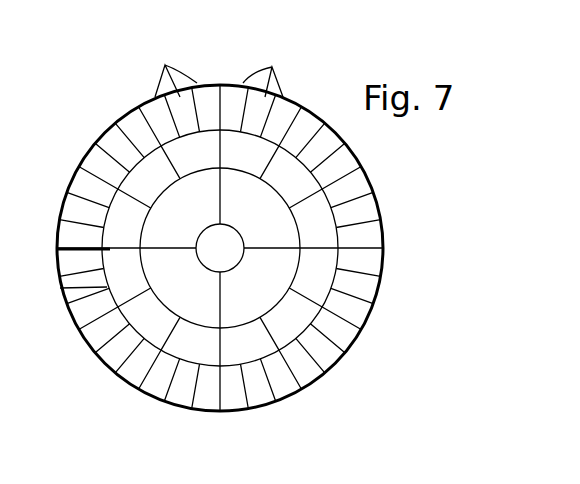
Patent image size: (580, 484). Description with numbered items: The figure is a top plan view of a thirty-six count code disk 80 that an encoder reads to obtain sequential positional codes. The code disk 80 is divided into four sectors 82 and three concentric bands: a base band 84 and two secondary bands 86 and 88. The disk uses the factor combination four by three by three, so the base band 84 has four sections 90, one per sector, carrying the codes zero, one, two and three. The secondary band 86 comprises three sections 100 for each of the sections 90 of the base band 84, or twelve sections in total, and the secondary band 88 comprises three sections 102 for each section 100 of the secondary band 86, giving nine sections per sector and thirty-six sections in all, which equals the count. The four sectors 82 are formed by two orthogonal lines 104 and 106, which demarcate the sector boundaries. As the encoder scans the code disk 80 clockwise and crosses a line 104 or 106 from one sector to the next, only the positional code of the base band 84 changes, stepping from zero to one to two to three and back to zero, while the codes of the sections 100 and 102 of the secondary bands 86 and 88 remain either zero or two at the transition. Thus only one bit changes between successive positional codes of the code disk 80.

The code disk 80 is at (130, 82).
The sectors 82 is at (152, 214).
The base band 84 is at (263, 190).
The secondary band 86 is at (345, 272).
The secondary band 88 is at (380, 322).
The sections of the base band 90 is at (157, 200).
The sections of secondary band 86 100 is at (60, 249).
The sections of secondary band 88 102 is at (165, 65).
The orthogonal line 104 is at (60, 288).
The orthogonal line 106 is at (214, 406).